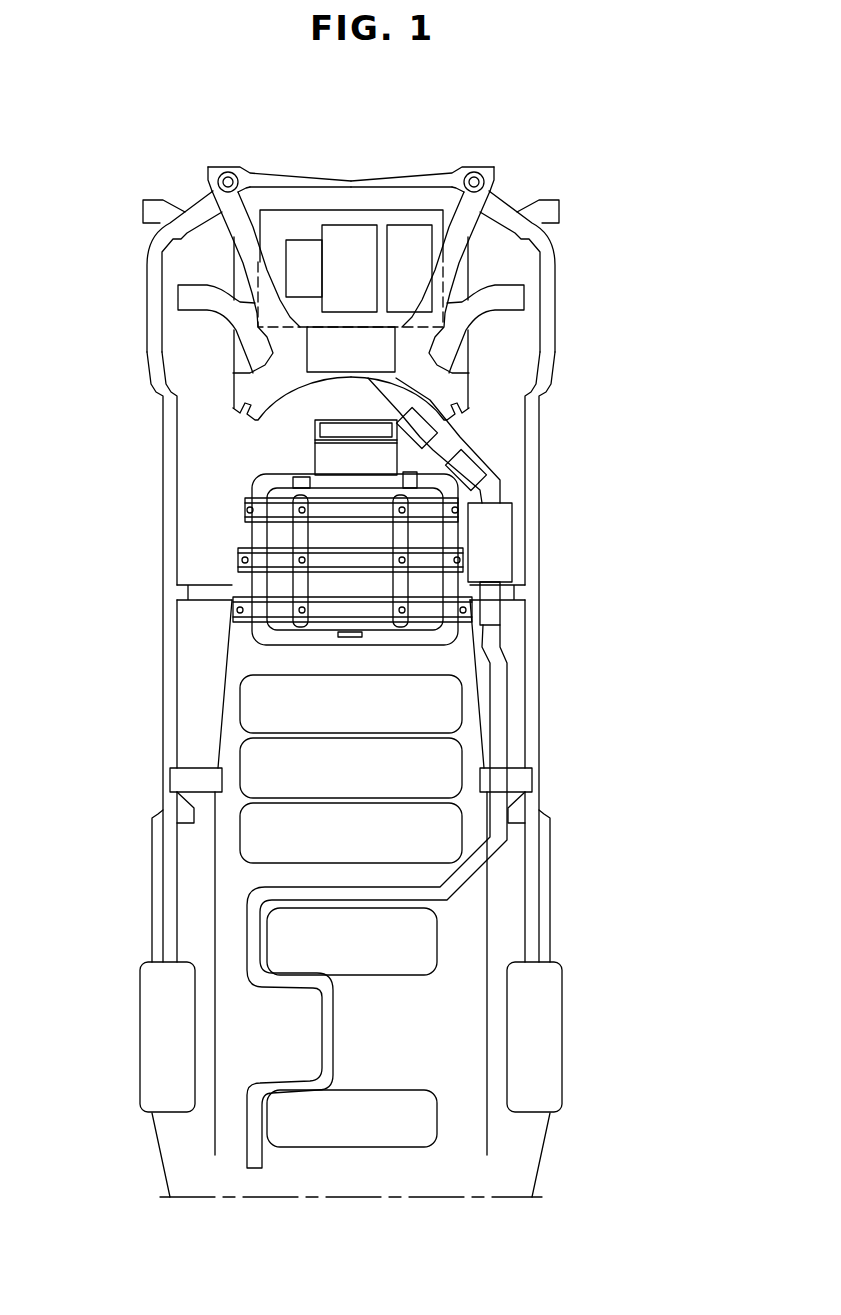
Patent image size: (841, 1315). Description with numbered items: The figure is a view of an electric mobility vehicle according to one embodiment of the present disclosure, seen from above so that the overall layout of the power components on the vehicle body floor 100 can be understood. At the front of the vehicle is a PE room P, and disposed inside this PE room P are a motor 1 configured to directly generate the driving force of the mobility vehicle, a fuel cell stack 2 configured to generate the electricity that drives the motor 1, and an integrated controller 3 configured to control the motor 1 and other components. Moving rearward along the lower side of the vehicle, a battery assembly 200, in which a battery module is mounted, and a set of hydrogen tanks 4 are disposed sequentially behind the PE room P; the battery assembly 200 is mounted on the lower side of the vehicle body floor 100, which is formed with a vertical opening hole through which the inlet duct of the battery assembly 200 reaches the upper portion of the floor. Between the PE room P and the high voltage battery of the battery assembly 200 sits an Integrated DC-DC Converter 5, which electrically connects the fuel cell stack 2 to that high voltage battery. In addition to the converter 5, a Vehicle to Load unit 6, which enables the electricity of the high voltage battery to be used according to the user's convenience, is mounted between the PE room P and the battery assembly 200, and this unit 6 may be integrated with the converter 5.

The vehicle body floor 100 is at (533, 455).
The battery assembly 200 is at (425, 537).
The PE room P is at (286, 210).
The motor 1 is at (347, 240).
The fuel cell stack 2 is at (298, 268).
The integrated controller 3 is at (410, 240).
The hydrogen tanks 4 is at (258, 835).
The Integrated DC-DC Converter (IDC) 5 is at (323, 458).
The Vehicle to Load (V2L) 6 is at (412, 422).